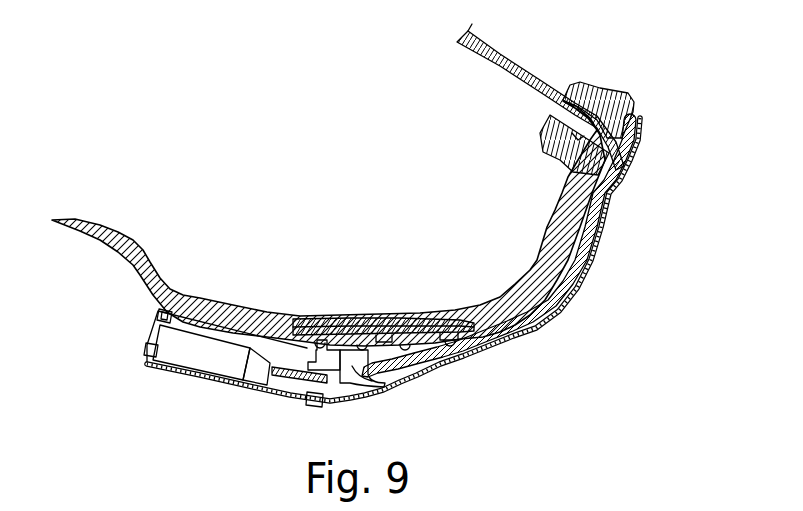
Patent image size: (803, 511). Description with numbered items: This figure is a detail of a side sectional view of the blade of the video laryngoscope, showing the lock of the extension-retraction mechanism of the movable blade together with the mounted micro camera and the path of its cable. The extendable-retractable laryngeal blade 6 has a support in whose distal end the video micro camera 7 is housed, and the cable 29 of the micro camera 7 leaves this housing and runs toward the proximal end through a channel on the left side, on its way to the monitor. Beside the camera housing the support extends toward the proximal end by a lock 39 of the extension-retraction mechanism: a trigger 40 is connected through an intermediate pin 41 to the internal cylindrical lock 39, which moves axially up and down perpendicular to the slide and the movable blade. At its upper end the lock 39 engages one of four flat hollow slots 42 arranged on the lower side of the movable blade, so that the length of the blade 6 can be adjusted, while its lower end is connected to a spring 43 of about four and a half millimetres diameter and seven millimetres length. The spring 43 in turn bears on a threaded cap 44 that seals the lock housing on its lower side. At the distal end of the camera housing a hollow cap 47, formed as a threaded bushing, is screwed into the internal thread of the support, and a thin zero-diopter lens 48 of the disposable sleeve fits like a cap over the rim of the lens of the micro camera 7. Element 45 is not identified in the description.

The extendable-retractable laryngeal blade 6 is at (160, 178).
The video micro camera 7 is at (190, 343).
The cable 29 is at (500, 62).
The lock 39 is at (305, 362).
The trigger 40 is at (372, 398).
The intermediate pin 41 is at (318, 340).
The flat hollow slots 42 is at (447, 322).
The spring 43 is at (300, 386).
The threaded cap 44 is at (313, 407).
The inner lining layer 45 is at (588, 238).
The hollow cap 47 is at (147, 348).
The lens 48 is at (157, 322).